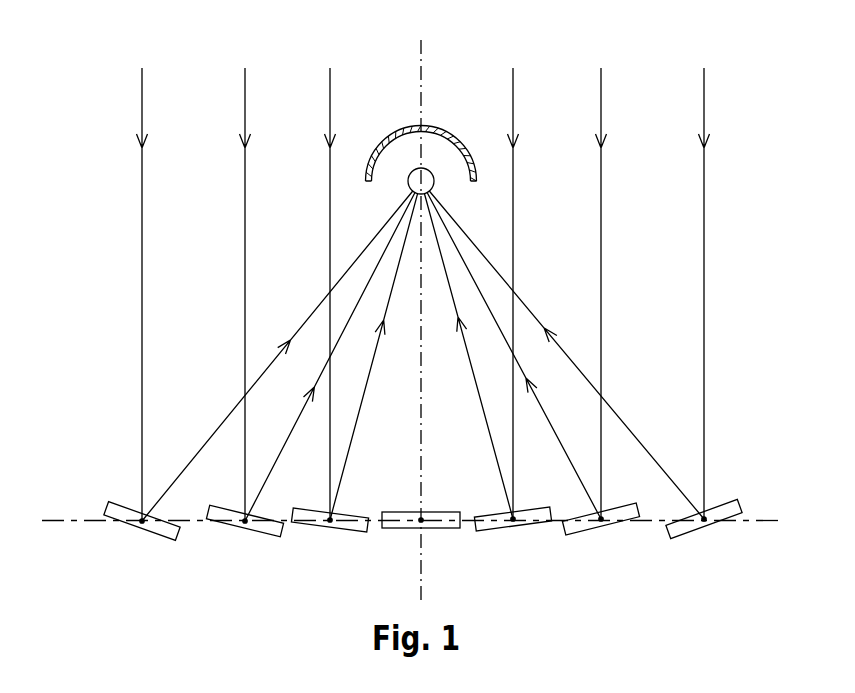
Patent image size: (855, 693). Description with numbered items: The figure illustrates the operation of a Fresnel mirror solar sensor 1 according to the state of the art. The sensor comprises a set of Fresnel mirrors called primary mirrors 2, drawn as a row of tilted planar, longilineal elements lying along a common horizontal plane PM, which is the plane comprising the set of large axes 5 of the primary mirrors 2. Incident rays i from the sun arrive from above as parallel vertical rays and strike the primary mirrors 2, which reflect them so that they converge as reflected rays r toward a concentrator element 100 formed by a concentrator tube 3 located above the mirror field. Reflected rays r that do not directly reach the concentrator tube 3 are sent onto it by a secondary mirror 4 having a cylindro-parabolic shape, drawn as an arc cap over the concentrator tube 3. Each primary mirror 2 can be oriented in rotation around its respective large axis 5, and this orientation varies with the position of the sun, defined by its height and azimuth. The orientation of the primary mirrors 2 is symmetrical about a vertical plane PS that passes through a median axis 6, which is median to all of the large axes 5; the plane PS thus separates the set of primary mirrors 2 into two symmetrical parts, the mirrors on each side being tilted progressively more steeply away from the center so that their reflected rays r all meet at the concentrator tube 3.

The Fresnel mirror solar sensor 1 is at (112, 90).
The primary mirror 2 is at (162, 537).
The concentrator tube 3 is at (430, 182).
The secondary mirror 4 is at (388, 141).
The large axis 5 is at (239, 523).
The median axis 6 is at (428, 522).
The concentrator element 100 is at (455, 141).
The incident rays i is at (247, 174).
The reflected rays r is at (305, 322).
The vertical plane PS is at (423, 63).
The plane PM is at (760, 521).